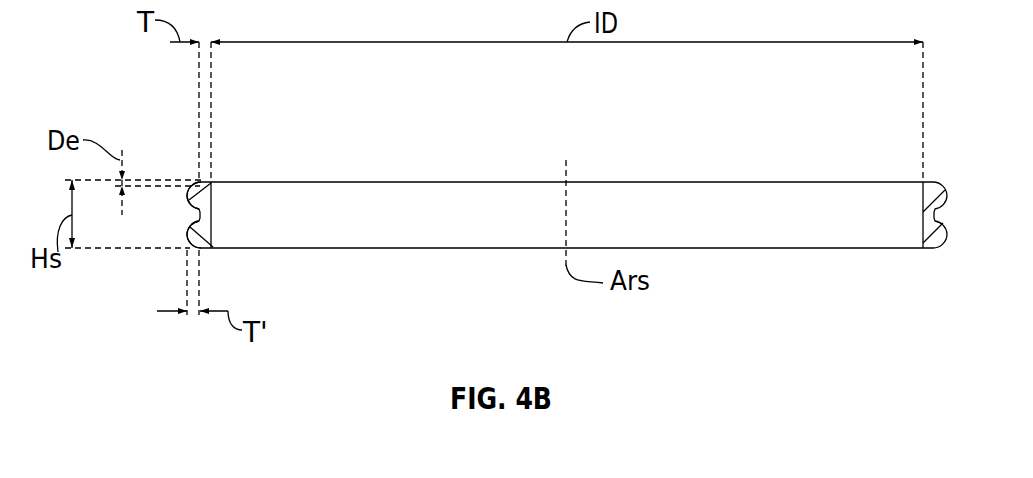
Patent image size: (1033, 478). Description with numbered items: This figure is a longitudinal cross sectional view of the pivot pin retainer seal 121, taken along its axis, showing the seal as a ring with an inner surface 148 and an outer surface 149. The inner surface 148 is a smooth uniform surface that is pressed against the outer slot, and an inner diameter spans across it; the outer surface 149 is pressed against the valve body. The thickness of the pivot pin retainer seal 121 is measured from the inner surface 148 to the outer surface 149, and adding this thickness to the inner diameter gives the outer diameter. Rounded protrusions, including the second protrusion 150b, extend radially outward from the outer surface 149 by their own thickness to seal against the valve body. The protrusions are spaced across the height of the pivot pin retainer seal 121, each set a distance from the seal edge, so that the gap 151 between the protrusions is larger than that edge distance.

The pivot pin retainer seal 121 is at (690, 178).
The inner surface 148 is at (420, 218).
The outer surface 149 is at (211, 183).
The second protrusion 150b is at (210, 184).
The gap 151 is at (213, 247).